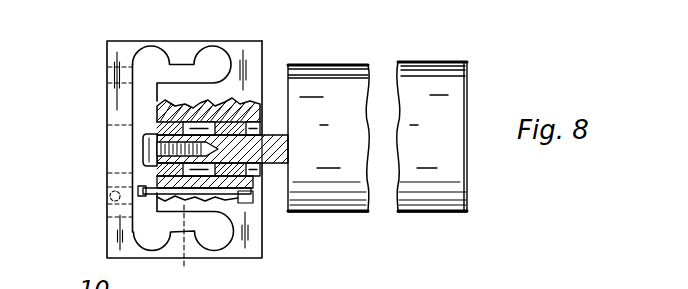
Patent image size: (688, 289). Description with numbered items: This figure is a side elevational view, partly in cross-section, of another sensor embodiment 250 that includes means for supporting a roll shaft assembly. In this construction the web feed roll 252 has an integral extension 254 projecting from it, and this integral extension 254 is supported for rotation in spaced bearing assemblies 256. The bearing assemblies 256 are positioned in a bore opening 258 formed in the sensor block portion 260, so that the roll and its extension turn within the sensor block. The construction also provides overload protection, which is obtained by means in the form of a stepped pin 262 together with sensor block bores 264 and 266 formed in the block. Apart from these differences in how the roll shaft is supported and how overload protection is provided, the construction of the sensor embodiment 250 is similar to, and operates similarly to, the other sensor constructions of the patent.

The sensor embodiment 250 is at (136, 38).
The web feed roll 252 is at (421, 96).
The integral extension 254 is at (274, 134).
The bearing assemblies 256 is at (158, 116).
The bore opening 258 is at (269, 150).
The sensor block portion 260 is at (262, 58).
The stepped pin 262 is at (221, 192).
The sensor block bore 264 is at (184, 241).
The sensor block bore 266 is at (104, 192).